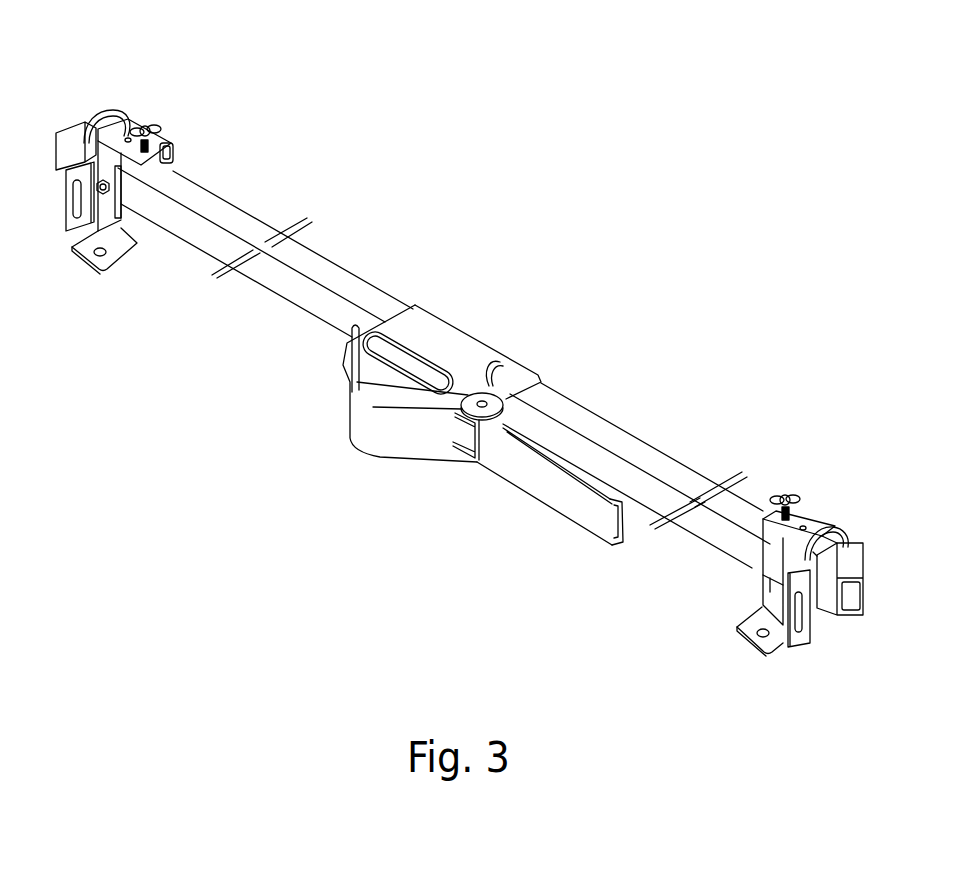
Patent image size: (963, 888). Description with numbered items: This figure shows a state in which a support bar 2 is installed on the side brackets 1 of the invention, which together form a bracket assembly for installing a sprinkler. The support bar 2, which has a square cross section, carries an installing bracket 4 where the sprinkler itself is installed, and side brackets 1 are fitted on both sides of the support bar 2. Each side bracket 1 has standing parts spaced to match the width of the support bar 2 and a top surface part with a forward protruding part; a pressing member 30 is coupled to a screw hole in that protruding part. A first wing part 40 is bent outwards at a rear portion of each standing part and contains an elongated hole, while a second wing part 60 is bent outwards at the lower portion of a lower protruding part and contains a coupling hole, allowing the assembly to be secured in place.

The side bracket 1 is at (120, 88).
The support bar 2 is at (327, 265).
The installing bracket 4 is at (462, 342).
The pressing member 30 is at (155, 129).
The first wing part 40 is at (66, 222).
The second wing part 60 is at (112, 263).